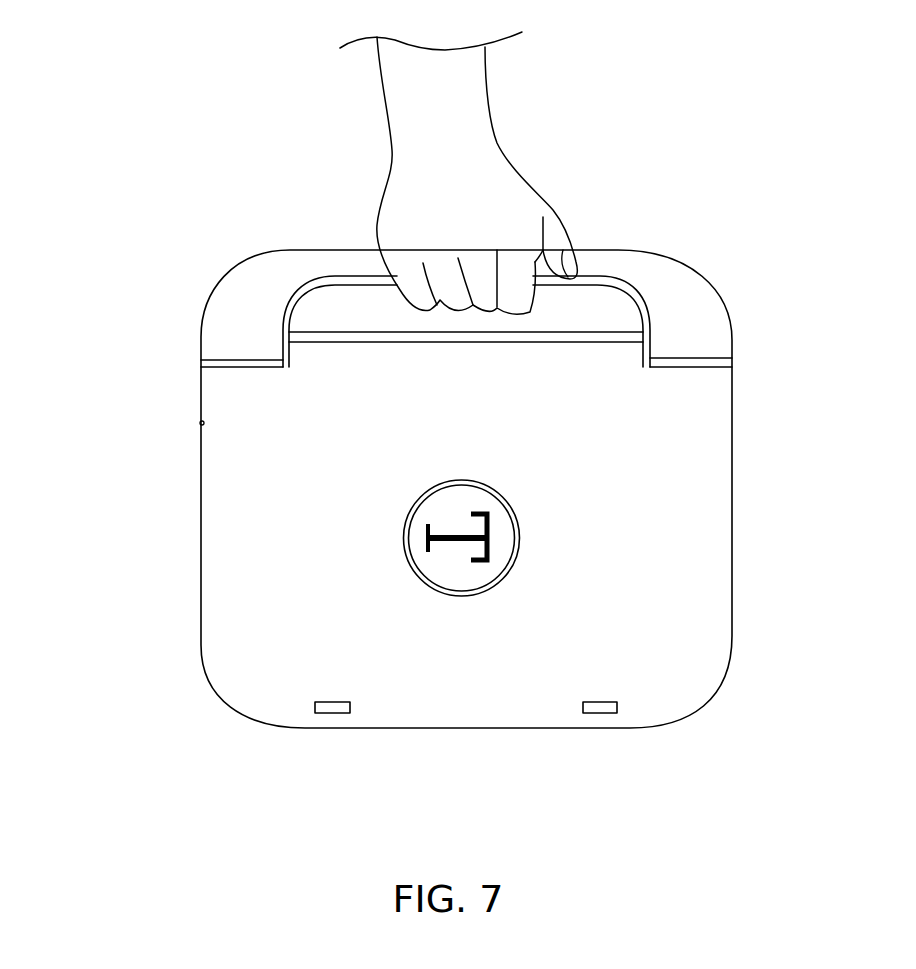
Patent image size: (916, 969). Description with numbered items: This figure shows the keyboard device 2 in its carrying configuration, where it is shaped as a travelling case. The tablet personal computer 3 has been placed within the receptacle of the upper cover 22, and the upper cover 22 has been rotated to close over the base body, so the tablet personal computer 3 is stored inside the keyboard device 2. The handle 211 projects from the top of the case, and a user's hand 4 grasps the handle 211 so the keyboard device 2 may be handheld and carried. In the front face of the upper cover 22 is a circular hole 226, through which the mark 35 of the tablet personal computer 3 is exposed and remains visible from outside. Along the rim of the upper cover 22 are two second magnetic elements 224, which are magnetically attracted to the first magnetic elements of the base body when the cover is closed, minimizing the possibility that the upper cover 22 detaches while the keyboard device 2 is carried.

The keyboard device 2 is at (778, 423).
The upper cover 22 is at (707, 540).
The handle 211 is at (676, 308).
The circular hole 226 is at (517, 565).
The second magnetic elements 224 is at (333, 708).
The tablet personal computer 3 is at (457, 567).
The mark 35 is at (448, 532).
The user's hand 4 is at (493, 163).